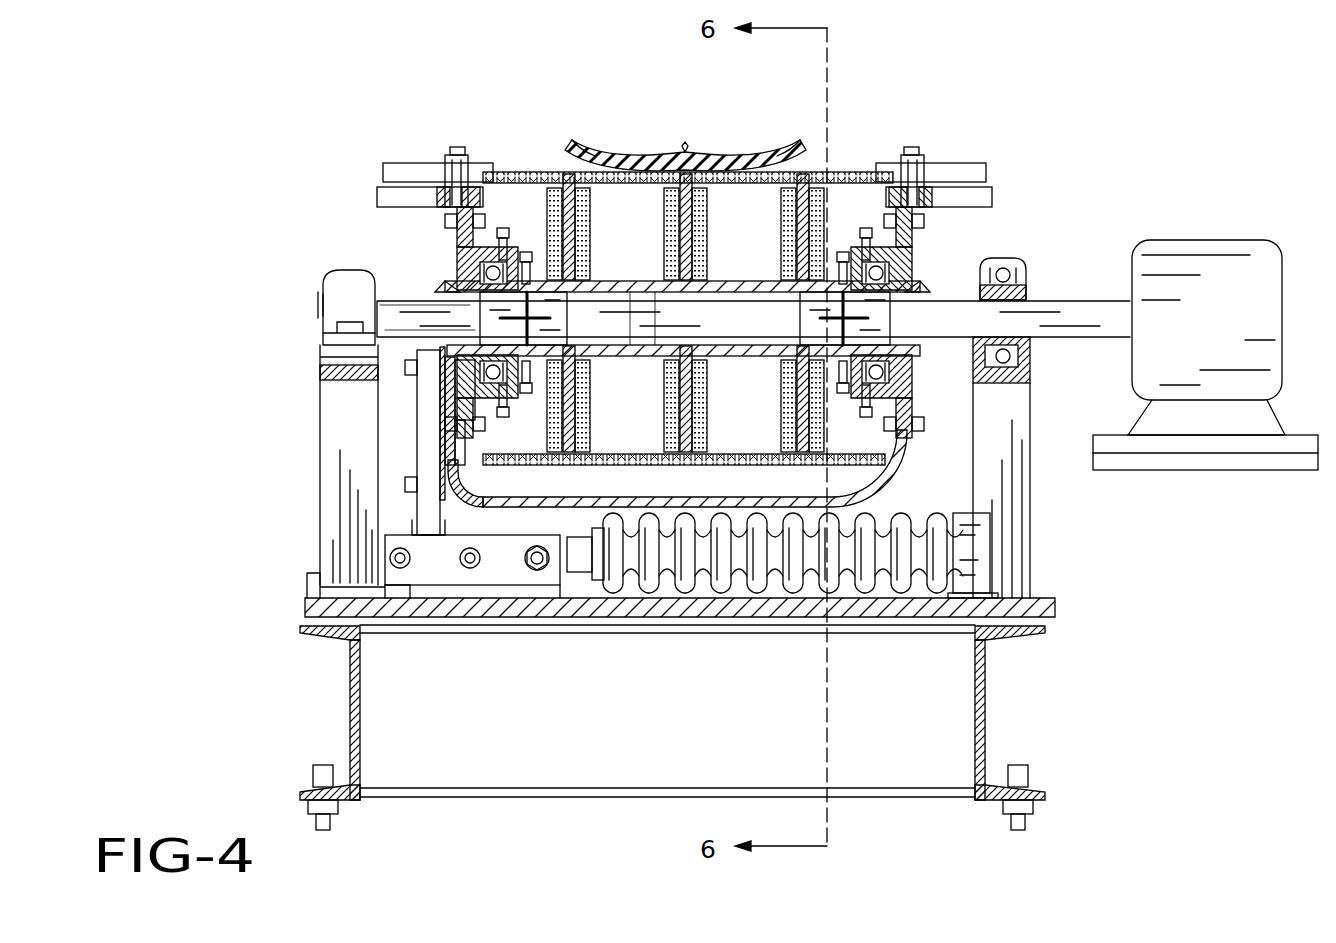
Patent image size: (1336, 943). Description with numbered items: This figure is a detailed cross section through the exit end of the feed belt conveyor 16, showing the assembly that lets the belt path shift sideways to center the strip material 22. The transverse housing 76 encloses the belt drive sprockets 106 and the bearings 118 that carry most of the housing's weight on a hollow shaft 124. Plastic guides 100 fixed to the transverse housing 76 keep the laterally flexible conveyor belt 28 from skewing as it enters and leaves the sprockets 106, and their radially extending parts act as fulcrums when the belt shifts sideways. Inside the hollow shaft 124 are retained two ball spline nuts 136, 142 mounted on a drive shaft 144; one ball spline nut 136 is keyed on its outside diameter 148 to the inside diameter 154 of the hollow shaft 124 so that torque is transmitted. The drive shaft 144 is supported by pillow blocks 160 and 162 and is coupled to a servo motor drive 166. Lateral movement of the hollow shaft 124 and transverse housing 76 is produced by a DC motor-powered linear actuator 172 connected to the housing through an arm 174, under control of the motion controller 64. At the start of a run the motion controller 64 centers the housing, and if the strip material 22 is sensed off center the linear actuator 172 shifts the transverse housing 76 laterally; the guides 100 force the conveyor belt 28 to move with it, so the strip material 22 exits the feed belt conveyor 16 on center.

The feed belt conveyor 16 is at (530, 800).
The strip material 22 is at (718, 140).
The conveyor belt 28 is at (520, 172).
The motion controller 64 is at (394, 131).
The transverse housing 76 is at (500, 497).
The guides 100 is at (468, 162).
The sprockets 106 is at (566, 178).
The bearings 118 is at (492, 265).
The hollow shaft 124 is at (633, 280).
The ball spline nut 136 is at (845, 302).
The ball spline nut 142 is at (522, 302).
The drive shaft 144 is at (420, 300).
The outside diameter 148 is at (530, 385).
The inside diameter 154 is at (642, 337).
The pillow block 160 is at (330, 278).
The pillow block 162 is at (1012, 258).
The servo motor drive 166 is at (1182, 240).
The linear actuator 172 is at (912, 515).
The arm 174 is at (428, 405).